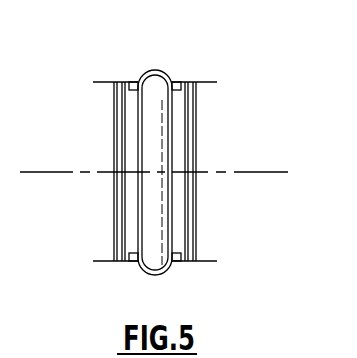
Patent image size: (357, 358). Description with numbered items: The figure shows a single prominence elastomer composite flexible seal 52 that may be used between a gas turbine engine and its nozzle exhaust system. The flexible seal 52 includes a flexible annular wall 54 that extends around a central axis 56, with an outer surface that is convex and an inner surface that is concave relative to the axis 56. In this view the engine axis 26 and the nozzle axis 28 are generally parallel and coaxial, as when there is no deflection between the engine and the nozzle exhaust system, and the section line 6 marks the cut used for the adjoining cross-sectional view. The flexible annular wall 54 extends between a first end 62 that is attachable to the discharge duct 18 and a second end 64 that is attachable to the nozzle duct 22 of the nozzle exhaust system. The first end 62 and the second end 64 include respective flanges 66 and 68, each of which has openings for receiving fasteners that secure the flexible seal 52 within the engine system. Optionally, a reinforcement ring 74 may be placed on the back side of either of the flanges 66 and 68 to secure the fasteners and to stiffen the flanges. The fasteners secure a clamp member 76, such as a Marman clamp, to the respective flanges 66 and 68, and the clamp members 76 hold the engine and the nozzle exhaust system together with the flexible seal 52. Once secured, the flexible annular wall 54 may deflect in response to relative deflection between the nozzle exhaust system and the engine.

The section line 6- 6 is at (73, 108).
The discharge duct 18 is at (105, 262).
The nozzle duct 22 is at (207, 262).
The axis 26 is at (52, 173).
The axis 28 is at (252, 172).
The flexible seal 52 is at (233, 138).
The flexible annular wall 54 is at (158, 78).
The central axis 56 is at (153, 162).
The first end 62 is at (112, 80).
The second end 64 is at (190, 80).
The flange 66 is at (135, 52).
The flange 68 is at (176, 82).
The reinforcement ring 74 is at (175, 263).
The clamp member 76 is at (117, 238).